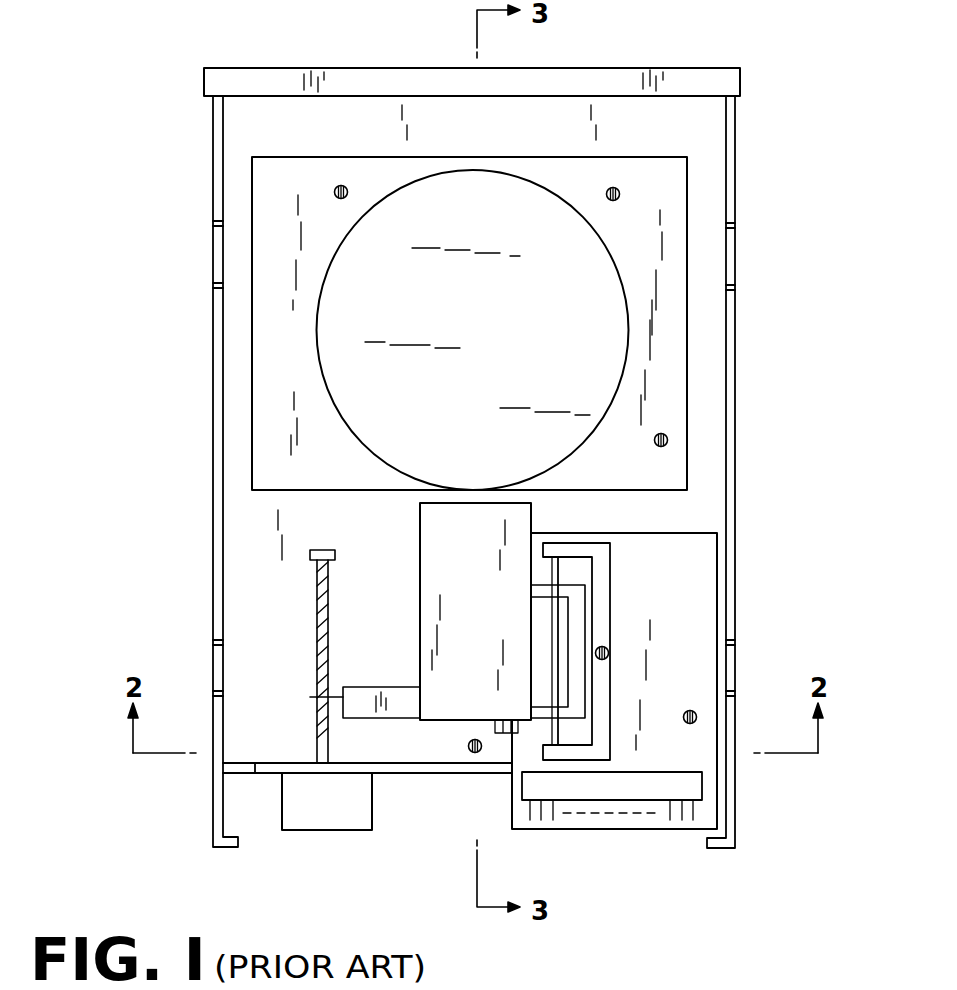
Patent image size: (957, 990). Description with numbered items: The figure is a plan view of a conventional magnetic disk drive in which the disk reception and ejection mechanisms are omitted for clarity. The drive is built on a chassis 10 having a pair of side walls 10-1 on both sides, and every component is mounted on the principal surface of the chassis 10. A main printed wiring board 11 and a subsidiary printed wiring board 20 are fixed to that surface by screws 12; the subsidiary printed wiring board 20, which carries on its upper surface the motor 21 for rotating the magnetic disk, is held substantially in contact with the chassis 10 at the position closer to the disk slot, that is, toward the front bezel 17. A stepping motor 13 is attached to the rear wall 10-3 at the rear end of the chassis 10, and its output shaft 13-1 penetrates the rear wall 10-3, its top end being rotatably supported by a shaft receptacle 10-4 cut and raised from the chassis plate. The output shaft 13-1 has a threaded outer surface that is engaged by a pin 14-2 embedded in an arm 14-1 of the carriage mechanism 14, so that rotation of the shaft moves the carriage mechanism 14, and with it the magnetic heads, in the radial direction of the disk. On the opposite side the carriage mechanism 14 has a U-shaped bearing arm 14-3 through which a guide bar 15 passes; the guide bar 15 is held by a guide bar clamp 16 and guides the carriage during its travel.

The chassis 10 is at (475, 472).
The side walls 10-1 is at (213, 425).
The rear wall 10-3 is at (427, 775).
The shaft receptacle 10-4 is at (318, 550).
The main printed wiring board 11 is at (688, 625).
The screws 12 is at (345, 186).
The stepping motor 13 is at (328, 833).
The output shaft 13-1 is at (318, 620).
The carriage mechanism 14 is at (473, 498).
The arm 14-1 is at (372, 700).
The pin 14-2 is at (318, 697).
The U-shaped bearing arm 14-3 is at (578, 614).
The guide bar 15 is at (560, 560).
The guide bar clamp 16 is at (603, 568).
The front bezel 17 is at (683, 68).
The subsidiary printed wiring board 20 is at (665, 340).
The motor 21 is at (530, 170).